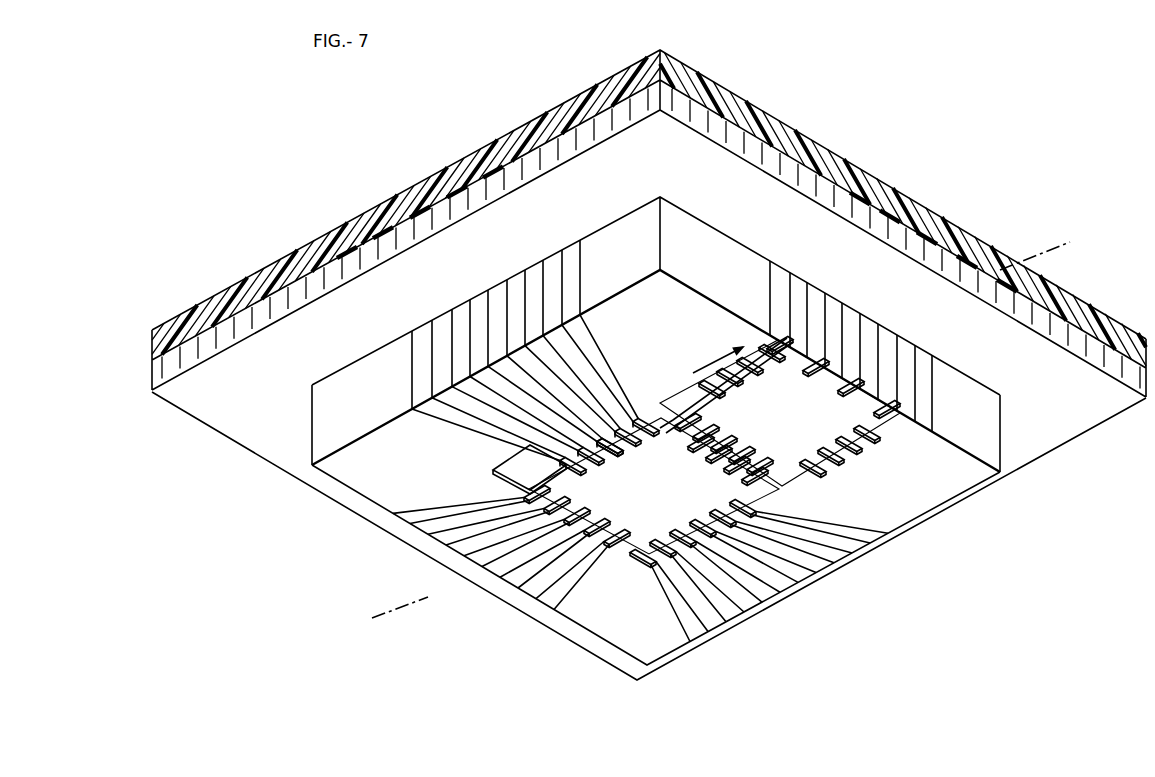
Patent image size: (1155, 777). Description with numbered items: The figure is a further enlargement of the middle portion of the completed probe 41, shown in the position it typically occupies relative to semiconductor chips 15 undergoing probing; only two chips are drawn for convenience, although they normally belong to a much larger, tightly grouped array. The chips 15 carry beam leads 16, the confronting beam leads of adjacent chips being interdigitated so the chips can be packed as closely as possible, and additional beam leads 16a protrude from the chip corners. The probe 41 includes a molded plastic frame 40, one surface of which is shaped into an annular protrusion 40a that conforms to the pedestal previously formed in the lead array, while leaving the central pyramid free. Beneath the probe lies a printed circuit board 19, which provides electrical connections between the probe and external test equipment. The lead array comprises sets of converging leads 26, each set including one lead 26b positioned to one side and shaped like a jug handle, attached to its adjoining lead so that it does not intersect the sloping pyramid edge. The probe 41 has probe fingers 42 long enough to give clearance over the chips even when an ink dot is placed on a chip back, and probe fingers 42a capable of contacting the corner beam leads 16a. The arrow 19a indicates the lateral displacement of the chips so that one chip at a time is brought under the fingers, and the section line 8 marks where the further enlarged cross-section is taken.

The frame 40 is at (597, 86).
The probe 41 is at (382, 196).
The annular protrusion 40a is at (322, 397).
The printed circuit board 19 is at (170, 399).
The arrow 19a is at (710, 360).
The converging leads 26 is at (443, 421).
The lead 26b is at (597, 357).
The probe fingers 42 is at (538, 447).
The probe fingers 42a is at (617, 433).
The beam leads 16 is at (620, 547).
The beam leads 16a is at (527, 488).
The semiconductor chips 15 is at (648, 541).
The section line 8- 8 is at (1052, 248).